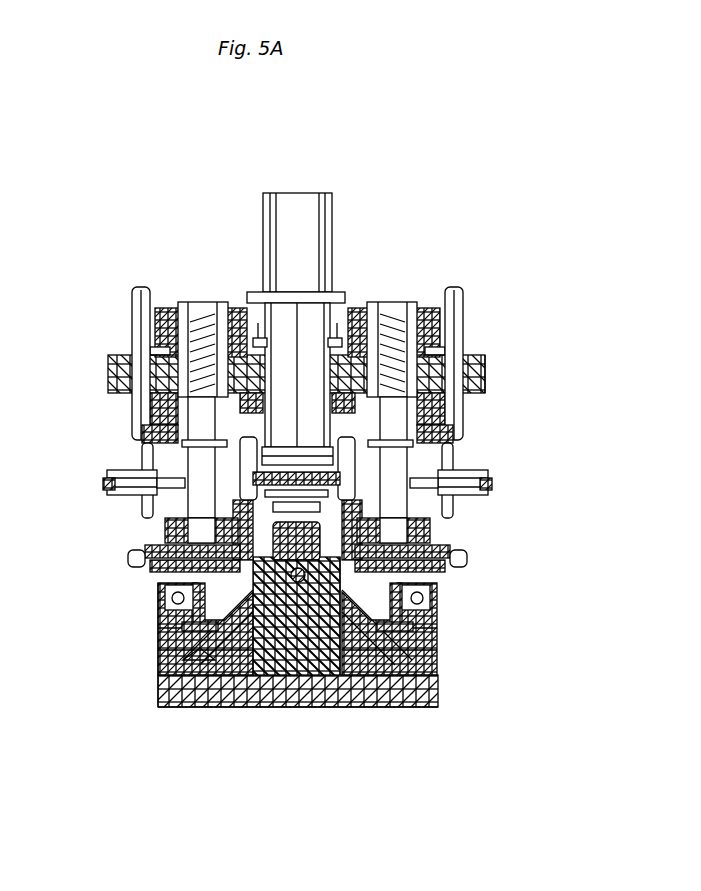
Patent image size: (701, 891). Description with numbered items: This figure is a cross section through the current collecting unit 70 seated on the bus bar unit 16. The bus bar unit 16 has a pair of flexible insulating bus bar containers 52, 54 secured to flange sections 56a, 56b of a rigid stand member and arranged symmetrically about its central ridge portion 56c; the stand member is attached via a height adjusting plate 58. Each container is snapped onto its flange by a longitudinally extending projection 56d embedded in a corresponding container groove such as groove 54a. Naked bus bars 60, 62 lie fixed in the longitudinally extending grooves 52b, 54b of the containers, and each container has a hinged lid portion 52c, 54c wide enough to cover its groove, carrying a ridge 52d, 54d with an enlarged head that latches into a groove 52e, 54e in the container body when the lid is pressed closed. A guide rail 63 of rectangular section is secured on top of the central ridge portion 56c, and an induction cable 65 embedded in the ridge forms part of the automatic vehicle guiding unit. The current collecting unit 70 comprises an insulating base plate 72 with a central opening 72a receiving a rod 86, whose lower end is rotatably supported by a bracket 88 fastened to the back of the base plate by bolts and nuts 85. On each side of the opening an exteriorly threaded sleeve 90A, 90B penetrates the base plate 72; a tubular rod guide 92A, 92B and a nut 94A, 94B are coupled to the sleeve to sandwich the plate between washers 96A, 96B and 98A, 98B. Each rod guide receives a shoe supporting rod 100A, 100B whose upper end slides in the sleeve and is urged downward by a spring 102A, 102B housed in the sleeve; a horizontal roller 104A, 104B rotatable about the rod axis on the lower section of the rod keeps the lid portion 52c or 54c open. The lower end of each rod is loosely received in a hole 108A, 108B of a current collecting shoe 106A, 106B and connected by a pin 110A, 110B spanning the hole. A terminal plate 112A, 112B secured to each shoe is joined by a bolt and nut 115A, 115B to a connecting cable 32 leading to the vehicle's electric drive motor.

The bus bar unit 16 is at (452, 676).
The connecting cable 32 is at (138, 293).
The bus bar container 52 is at (440, 657).
The longitudinally extending groove 52b is at (432, 637).
The lid portion 52c is at (363, 420).
The longitudinally extending ridge 52d is at (407, 440).
The longitudinally extending groove 52e is at (422, 597).
The bus bar container 54 is at (167, 657).
The longitudinally extending groove 54a is at (200, 665).
The longitudinally extending groove 54b is at (172, 628).
The lid portion 54c is at (167, 427).
The longitudinally extending ridge 54d is at (180, 455).
The longitudinally extending groove 54e is at (187, 610).
The flange section 56a is at (437, 663).
The flange section 56b is at (192, 653).
The central ridge portion 56c is at (262, 640).
The longitudinally extending projection 56d is at (400, 640).
The height adjusting plate 58 is at (312, 650).
The naked bus bar 60 is at (442, 676).
The naked bus bar 62 is at (158, 680).
The guide rail 63 is at (333, 640).
The induction cable 65 is at (285, 600).
The current collecting unit 70 is at (499, 240).
The base plate 72 is at (473, 373).
The opening 72a is at (305, 360).
The bolts and nuts 85 is at (260, 330).
The rod 86 is at (282, 315).
The bracket 88 is at (305, 582).
The exteriorly threaded sleeve 90A is at (412, 310).
The exteriorly threaded sleeve 90B is at (175, 305).
The tubular rod guide 92A is at (445, 400).
The tubular rod guide 92B is at (153, 407).
The nut 94A is at (425, 307).
The nut 94B is at (158, 347).
The washer 96A is at (440, 347).
The washer 96B is at (155, 350).
The washer 98A is at (443, 354).
The washer 98B is at (158, 356).
The shoe supporting rod 100A is at (393, 497).
The shoe supporting rod 100B is at (193, 497).
The spring 102A is at (385, 317).
The spring 102B is at (202, 317).
The horizontal roller 104A is at (423, 527).
The horizontal roller 104B is at (172, 530).
The current collecting shoe 106A is at (418, 590).
The current collecting shoe 106B is at (167, 592).
The hole 108A is at (388, 632).
The hole 108B is at (205, 632).
The pin 110A is at (462, 553).
The pin 110B is at (130, 558).
The terminal plate 112A is at (447, 482).
The terminal plate 112B is at (143, 483).
The bolt and nut 115A is at (472, 492).
The bolt and nut 115B is at (110, 490).